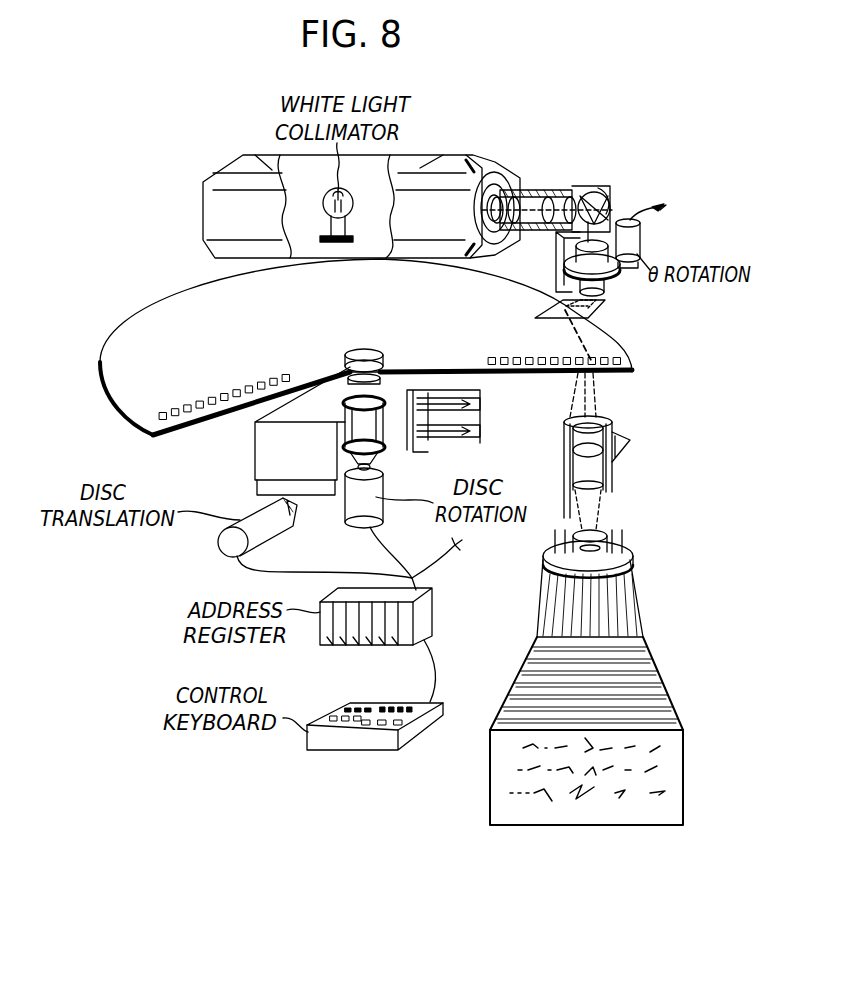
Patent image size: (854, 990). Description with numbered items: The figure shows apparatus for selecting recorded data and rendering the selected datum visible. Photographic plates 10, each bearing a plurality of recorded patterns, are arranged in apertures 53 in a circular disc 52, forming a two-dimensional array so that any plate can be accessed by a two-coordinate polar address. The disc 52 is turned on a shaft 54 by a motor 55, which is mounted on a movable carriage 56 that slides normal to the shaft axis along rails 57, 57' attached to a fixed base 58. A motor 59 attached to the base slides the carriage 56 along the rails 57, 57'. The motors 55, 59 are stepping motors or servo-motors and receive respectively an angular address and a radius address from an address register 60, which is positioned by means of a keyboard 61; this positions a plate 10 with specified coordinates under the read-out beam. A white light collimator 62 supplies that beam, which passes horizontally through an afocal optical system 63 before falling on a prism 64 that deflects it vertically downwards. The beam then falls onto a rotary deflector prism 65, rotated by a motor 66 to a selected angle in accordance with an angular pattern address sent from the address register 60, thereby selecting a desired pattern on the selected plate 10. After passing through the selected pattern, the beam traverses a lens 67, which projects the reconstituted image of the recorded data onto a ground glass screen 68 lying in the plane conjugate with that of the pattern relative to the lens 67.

The photographic plate 10 is at (167, 420).
The circular disc 52 is at (106, 358).
The aperture 53 is at (174, 436).
The shaft 54 is at (372, 440).
The motor 55 is at (378, 522).
The movable carriage 56 is at (265, 443).
The rail 57 is at (467, 395).
The rail 57' is at (469, 438).
The fixed base 58 is at (482, 418).
The motor 59 is at (268, 528).
The address register 60 is at (424, 620).
The keyboard 61 is at (418, 734).
The white light collimator 62 is at (215, 185).
The afocal optical system 63 is at (546, 190).
The prism 64 is at (598, 192).
The rotary deflector prism 65 is at (598, 296).
The motor 66 is at (641, 242).
The lens 67 is at (600, 474).
The ground glass screen 68 is at (495, 793).